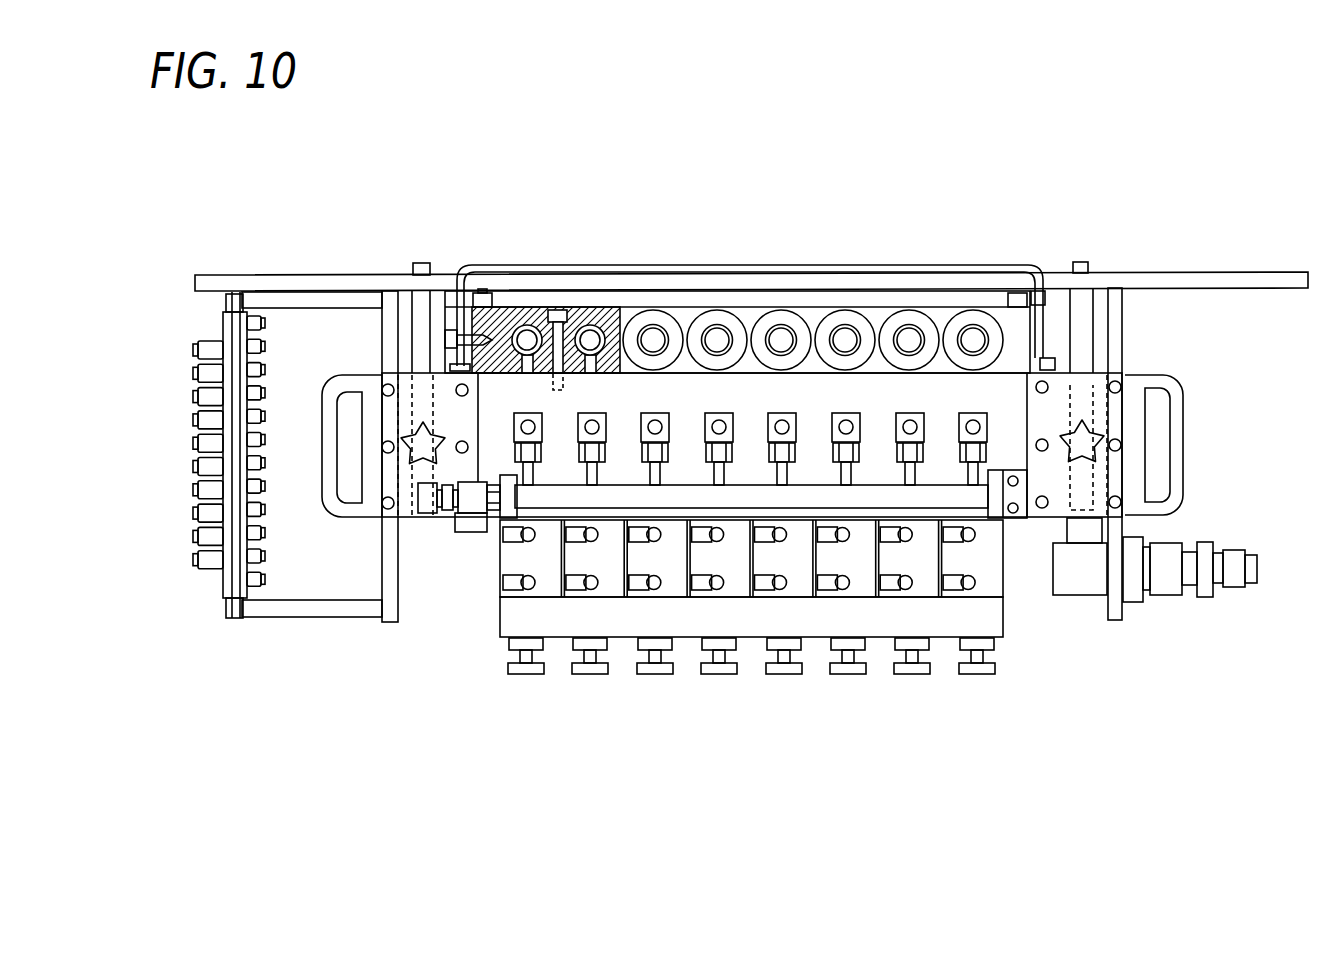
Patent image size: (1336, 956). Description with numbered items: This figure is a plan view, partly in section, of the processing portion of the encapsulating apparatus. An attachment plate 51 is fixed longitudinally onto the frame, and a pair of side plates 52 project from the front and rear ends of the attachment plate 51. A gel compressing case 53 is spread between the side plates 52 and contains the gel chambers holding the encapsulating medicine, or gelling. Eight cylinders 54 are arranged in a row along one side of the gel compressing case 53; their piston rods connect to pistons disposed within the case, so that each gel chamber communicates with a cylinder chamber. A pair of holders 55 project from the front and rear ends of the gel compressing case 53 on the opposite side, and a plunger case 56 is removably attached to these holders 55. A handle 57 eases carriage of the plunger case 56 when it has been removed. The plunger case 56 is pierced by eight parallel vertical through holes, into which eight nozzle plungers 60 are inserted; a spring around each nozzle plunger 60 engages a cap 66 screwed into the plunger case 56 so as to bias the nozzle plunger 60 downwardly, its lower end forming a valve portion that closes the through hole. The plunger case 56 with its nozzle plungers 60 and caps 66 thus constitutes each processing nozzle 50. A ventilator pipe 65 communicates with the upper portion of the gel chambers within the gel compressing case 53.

The processing nozzle 50 is at (526, 248).
The attachment plate 51 is at (1180, 272).
The side plate 52 is at (392, 610).
The gel compressing case 53 is at (998, 407).
The cylinder 54 is at (543, 590).
The holder 55 is at (442, 348).
The plunger case 56 is at (879, 312).
The handle 57 is at (628, 264).
The nozzle plunger 60 is at (715, 326).
The ventilator pipe 65 is at (557, 500).
The cap 66 is at (918, 316).